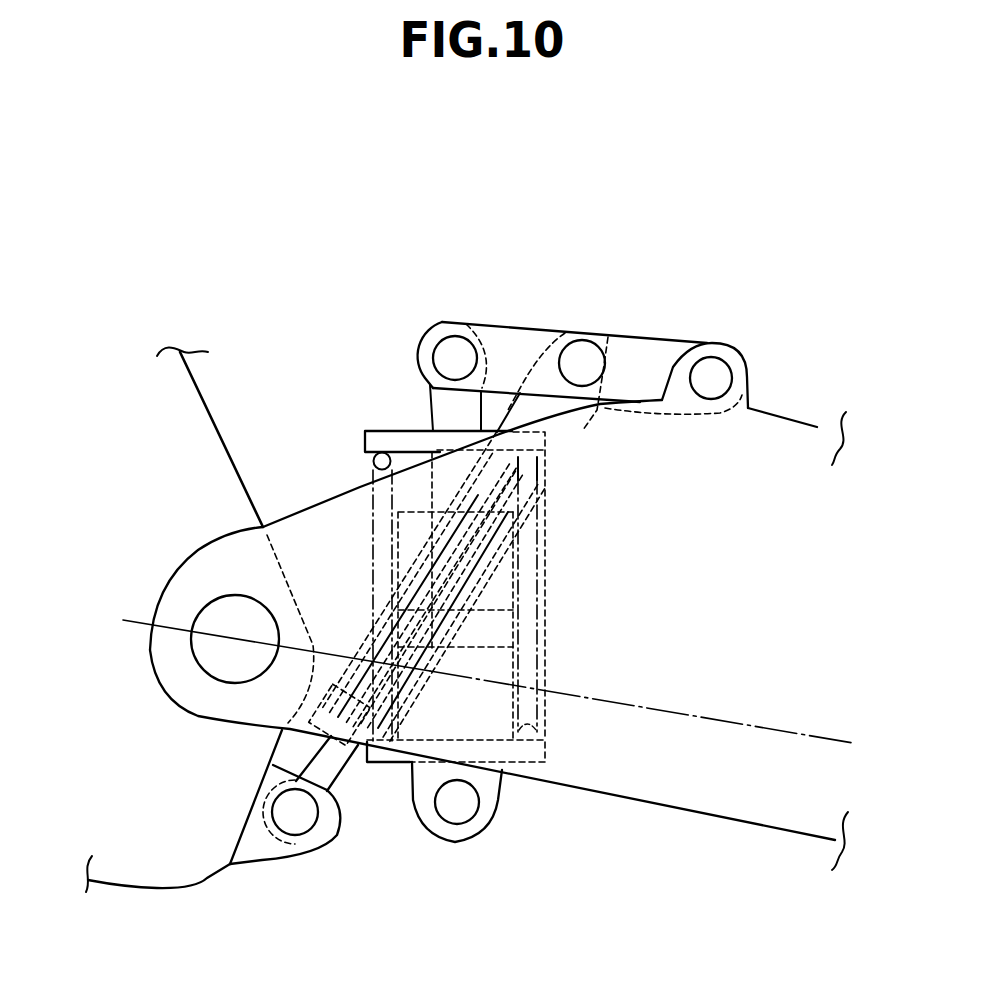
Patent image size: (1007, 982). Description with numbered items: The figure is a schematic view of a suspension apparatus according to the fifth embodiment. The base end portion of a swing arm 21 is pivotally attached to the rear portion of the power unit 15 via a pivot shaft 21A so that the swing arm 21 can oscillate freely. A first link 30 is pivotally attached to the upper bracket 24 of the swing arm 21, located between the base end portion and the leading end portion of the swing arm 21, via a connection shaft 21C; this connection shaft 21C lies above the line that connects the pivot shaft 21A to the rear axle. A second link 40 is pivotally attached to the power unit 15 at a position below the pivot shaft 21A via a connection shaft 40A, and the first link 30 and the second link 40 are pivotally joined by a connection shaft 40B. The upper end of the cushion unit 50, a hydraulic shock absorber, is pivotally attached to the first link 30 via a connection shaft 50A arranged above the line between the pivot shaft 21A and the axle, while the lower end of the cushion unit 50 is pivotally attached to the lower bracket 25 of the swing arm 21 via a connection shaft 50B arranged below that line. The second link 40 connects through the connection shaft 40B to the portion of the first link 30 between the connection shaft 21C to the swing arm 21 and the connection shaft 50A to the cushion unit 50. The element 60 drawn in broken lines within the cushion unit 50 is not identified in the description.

The power unit 15 is at (203, 442).
The swing arm 21 is at (815, 428).
The pivot shaft 21A is at (227, 615).
The connection shaft 21C is at (715, 368).
The upper bracket 24 is at (750, 412).
The lower bracket 25 is at (500, 780).
The first link 30 is at (645, 355).
The second link 40 is at (545, 456).
The connection shaft 40A is at (293, 820).
The connection shaft 40B is at (581, 357).
The cushion unit 50 is at (400, 440).
The connection shaft 50A is at (455, 355).
The connection shaft 50B is at (461, 812).
The spring 60 is at (544, 480).